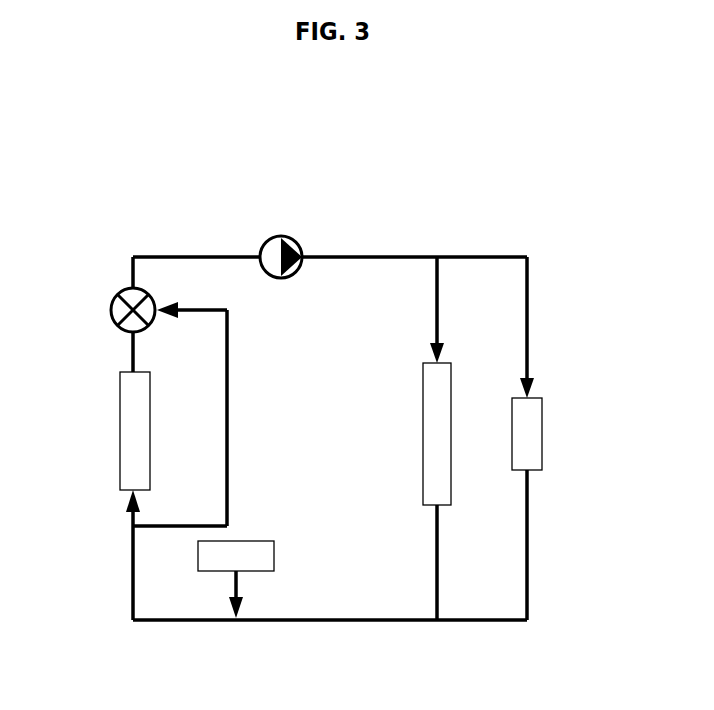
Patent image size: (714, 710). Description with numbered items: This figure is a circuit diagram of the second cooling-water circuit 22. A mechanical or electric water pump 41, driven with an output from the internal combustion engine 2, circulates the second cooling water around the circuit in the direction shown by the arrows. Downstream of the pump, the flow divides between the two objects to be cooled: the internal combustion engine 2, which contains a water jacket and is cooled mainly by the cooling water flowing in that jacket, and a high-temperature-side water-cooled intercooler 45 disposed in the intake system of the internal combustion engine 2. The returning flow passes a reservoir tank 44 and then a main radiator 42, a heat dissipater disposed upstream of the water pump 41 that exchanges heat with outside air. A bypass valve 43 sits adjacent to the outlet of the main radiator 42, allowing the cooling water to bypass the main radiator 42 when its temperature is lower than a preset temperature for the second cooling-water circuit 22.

The second cooling-water circuit 22 is at (542, 226).
The water pump 41 is at (294, 235).
The bypass valve 43 is at (111, 310).
The main radiator 42 is at (150, 427).
The internal combustion engine 2 is at (423, 435).
The high-temperature-side water-cooled intercooler 45 is at (542, 440).
The reservoir tank 44 is at (274, 555).